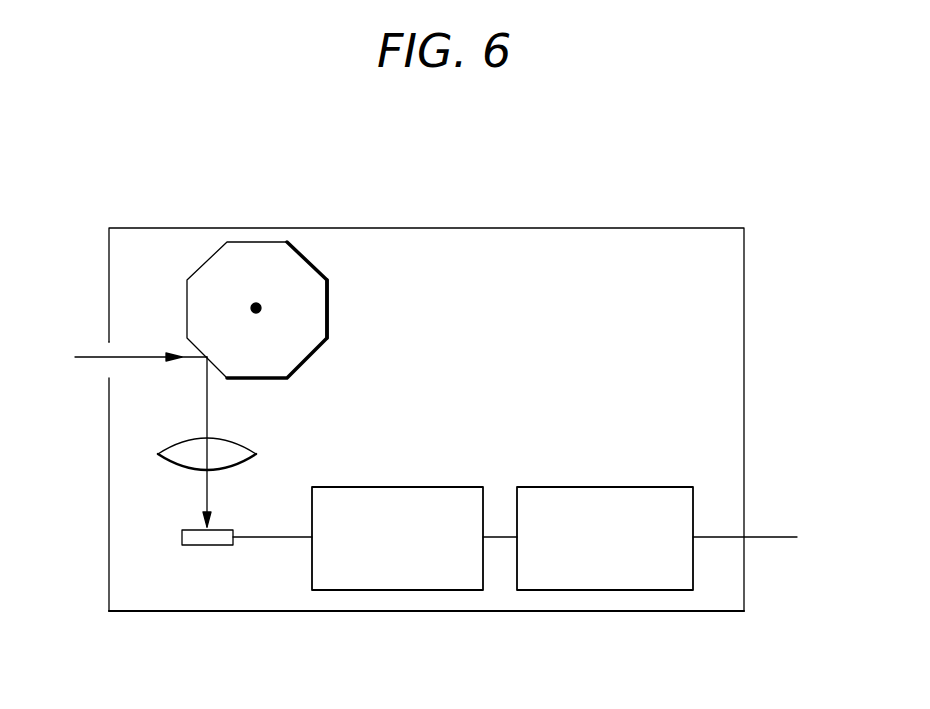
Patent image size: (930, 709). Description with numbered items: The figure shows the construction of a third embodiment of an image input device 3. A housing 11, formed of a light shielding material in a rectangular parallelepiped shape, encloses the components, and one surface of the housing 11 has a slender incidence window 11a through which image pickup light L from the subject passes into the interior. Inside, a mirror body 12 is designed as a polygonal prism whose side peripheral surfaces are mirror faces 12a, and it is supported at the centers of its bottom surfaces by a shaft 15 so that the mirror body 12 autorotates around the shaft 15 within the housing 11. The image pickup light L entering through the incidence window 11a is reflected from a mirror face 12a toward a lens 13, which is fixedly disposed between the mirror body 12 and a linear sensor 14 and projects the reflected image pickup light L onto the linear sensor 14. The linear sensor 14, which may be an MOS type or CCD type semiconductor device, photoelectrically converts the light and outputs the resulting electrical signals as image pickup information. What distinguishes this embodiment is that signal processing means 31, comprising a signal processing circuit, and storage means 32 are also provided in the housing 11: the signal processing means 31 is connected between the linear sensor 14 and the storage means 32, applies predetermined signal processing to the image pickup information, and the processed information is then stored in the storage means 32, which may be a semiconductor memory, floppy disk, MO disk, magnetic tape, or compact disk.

The image input device 3 is at (474, 175).
The housing 11 is at (183, 228).
The incidence window 11a is at (109, 350).
The image pickup light L is at (78, 373).
The mirror body 12 is at (326, 252).
The mirror face 12a is at (328, 319).
The shaft 15 is at (256, 305).
The lens 13 is at (177, 462).
The linear sensor 14 is at (210, 547).
The signal processing means 31 is at (397, 592).
The storage means 32 is at (590, 592).